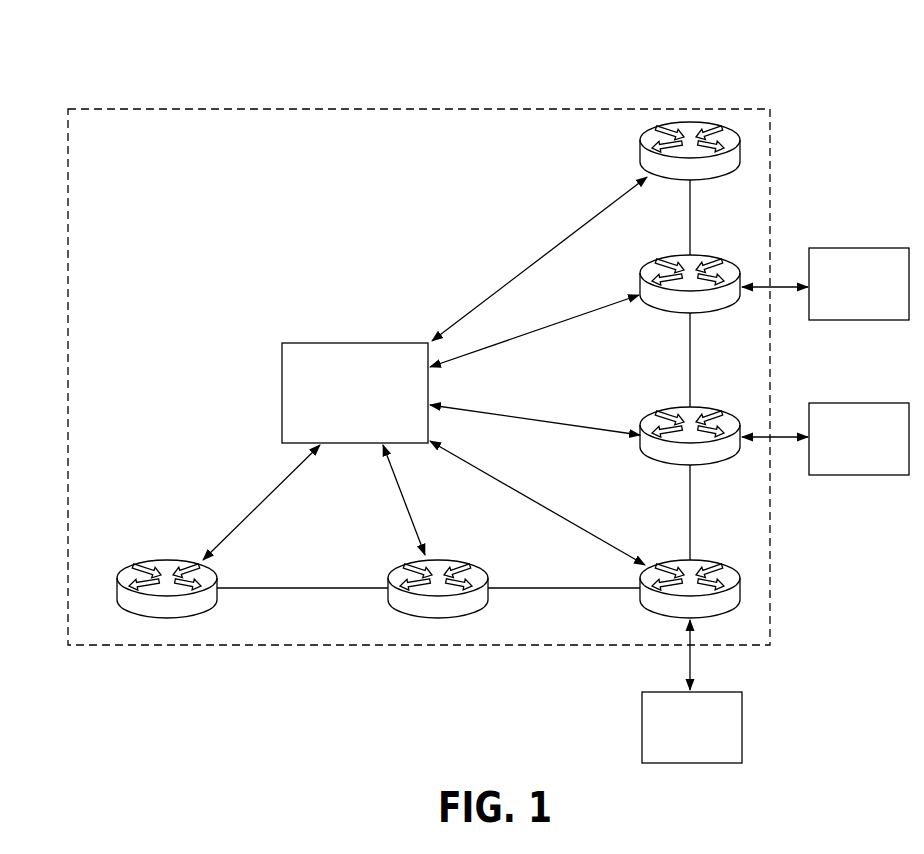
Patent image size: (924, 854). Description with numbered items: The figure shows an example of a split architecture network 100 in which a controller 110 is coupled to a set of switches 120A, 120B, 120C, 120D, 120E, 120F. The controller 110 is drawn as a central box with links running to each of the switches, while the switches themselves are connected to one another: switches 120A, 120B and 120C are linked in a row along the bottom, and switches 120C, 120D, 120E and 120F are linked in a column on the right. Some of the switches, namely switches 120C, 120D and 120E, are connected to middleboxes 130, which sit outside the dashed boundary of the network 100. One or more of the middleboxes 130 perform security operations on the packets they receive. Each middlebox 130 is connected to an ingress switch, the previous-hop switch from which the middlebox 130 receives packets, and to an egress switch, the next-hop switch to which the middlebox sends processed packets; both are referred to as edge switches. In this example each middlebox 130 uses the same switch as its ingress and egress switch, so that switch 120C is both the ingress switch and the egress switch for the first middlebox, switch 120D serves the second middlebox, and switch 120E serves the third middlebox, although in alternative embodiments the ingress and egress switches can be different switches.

The split architecture network 100 is at (318, 106).
The controller 110 is at (355, 393).
The switch 120A is at (150, 560).
The switch 120B is at (455, 560).
The switch 120C is at (708, 560).
The switch 120D is at (708, 407).
The switch 120E is at (710, 255).
The switch 120F is at (710, 122).
The middlebox 130 is at (775, 505).